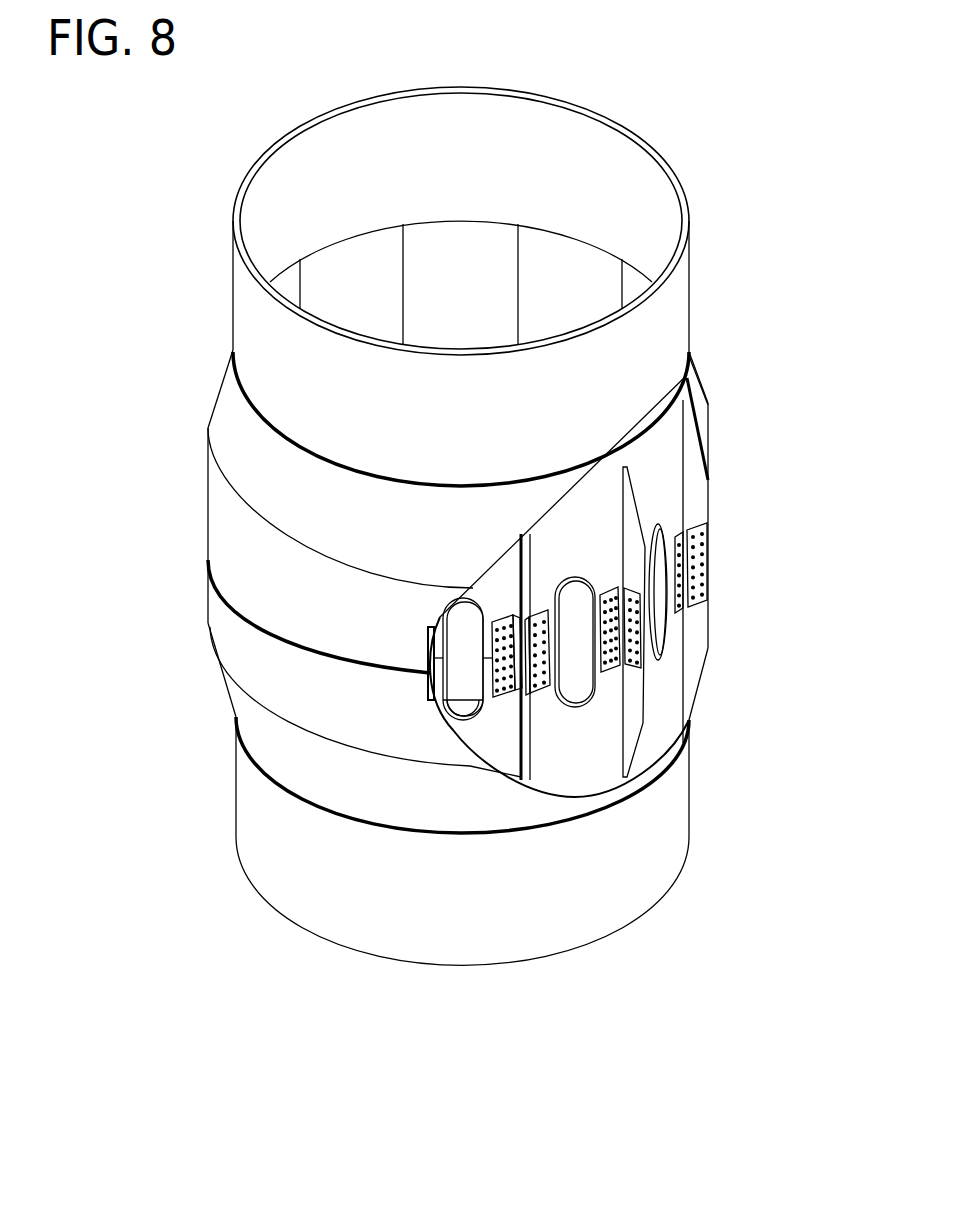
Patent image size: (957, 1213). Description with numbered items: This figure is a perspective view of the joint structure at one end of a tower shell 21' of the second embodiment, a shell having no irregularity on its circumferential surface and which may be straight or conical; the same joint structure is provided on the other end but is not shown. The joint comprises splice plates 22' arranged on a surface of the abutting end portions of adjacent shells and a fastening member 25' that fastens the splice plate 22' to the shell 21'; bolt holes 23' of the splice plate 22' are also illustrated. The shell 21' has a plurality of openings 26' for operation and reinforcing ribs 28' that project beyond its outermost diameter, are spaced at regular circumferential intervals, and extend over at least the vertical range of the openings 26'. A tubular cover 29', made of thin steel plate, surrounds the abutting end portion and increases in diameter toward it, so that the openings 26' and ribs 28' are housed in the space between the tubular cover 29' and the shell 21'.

The shell 21' is at (524, 526).
The tubular cover 29' is at (396, 591).
The reinforcing rib 28' is at (756, 424).
The opening for operation 26' is at (420, 827).
The splice plate 22' is at (516, 825).
The fastening member 25' is at (556, 842).
The bolt hole of the splice plate 23' is at (588, 807).